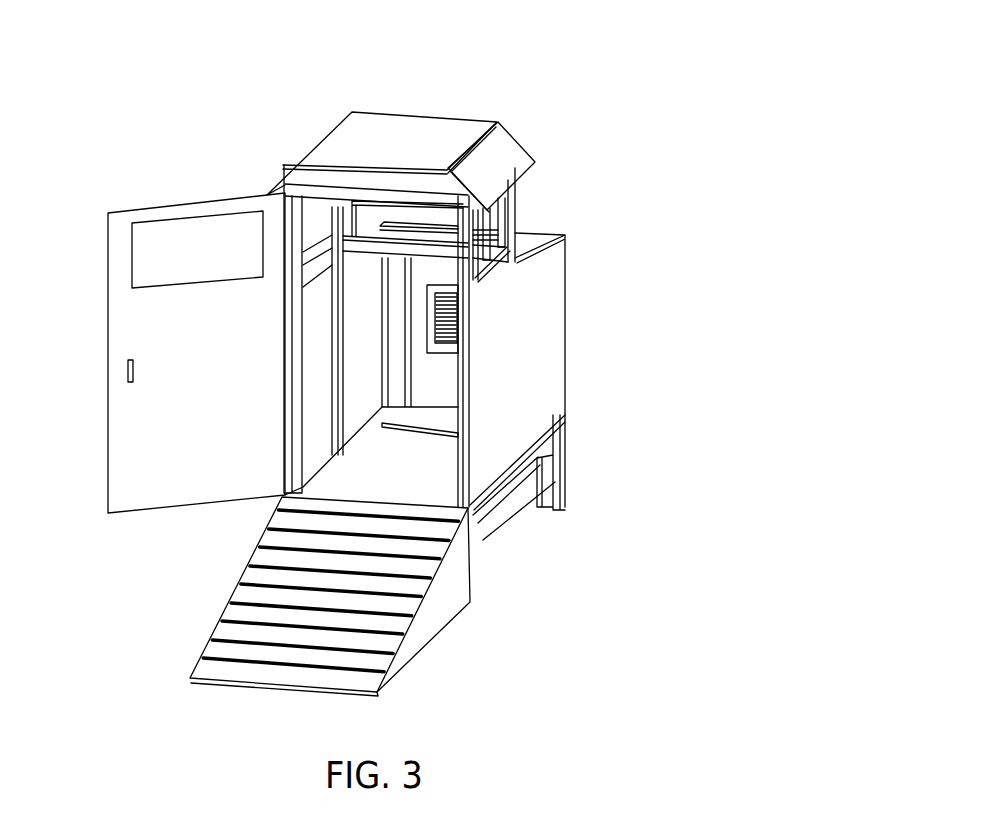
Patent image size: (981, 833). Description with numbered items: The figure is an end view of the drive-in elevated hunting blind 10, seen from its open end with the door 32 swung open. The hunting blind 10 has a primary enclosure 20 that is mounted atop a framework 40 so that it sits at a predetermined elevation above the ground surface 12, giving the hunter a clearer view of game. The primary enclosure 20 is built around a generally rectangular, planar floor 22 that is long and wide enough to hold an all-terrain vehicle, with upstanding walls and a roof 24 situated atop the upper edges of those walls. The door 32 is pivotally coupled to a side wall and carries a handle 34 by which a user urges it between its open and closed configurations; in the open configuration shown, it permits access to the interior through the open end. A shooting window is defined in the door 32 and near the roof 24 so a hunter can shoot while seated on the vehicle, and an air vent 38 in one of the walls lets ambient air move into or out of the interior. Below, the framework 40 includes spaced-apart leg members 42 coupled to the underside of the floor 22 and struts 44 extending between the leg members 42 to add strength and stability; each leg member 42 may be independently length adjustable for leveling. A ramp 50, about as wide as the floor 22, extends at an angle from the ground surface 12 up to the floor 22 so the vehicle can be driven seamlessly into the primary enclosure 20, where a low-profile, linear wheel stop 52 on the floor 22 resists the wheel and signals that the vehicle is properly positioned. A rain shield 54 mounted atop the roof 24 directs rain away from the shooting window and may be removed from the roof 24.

The hunting blind 10 is at (556, 80).
The ground surface 12 is at (602, 630).
The primary enclosure 20 is at (618, 344).
The floor 22 is at (343, 487).
The roof 24 is at (307, 173).
The door 32 is at (117, 470).
The handle 34 is at (127, 373).
The air vent 38 is at (443, 345).
The framework 40 is at (503, 548).
The leg members 42 is at (562, 487).
The struts 44 is at (515, 503).
The ramp 50 is at (425, 613).
The wheel stop 52 is at (410, 433).
The rain shield 54 is at (517, 145).